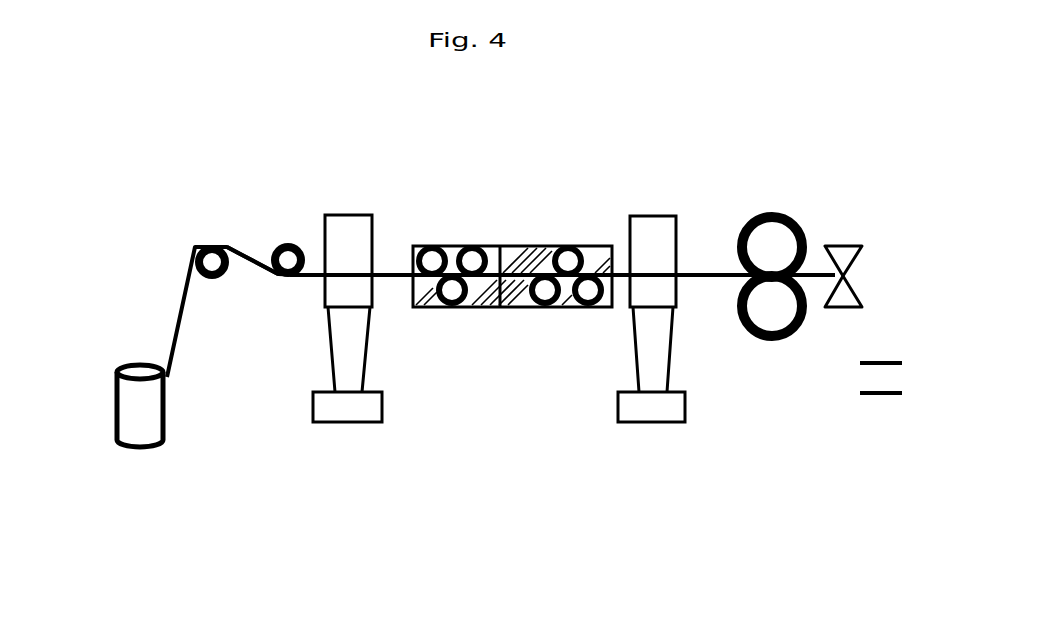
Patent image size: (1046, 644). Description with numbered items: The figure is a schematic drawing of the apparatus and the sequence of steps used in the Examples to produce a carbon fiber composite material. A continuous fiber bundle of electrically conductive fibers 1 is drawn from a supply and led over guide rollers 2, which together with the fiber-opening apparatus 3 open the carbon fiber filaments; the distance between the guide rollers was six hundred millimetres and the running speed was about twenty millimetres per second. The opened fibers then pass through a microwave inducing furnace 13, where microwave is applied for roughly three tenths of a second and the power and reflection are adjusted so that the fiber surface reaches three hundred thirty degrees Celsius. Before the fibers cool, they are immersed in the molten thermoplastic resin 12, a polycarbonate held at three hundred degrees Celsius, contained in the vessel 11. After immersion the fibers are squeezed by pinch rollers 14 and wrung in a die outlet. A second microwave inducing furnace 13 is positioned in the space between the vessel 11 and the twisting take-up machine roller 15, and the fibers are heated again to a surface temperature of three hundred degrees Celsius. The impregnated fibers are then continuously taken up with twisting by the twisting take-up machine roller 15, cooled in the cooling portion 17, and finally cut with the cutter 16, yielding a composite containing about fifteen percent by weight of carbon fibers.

The continuous fiber bundle of electrically conductive fibers 1 is at (158, 314).
The guide roller 2 is at (275, 221).
The fiber-opening apparatus 3 is at (242, 280).
The vessel 11 is at (547, 318).
The thermoplastic resin 12 is at (521, 240).
The microwave inducing furnace 13 is at (632, 439).
The pinch roller 14 is at (451, 262).
The twisting take-up machine roller 15 is at (776, 353).
The cutter 16 is at (842, 232).
The cooling portion 17 is at (713, 290).